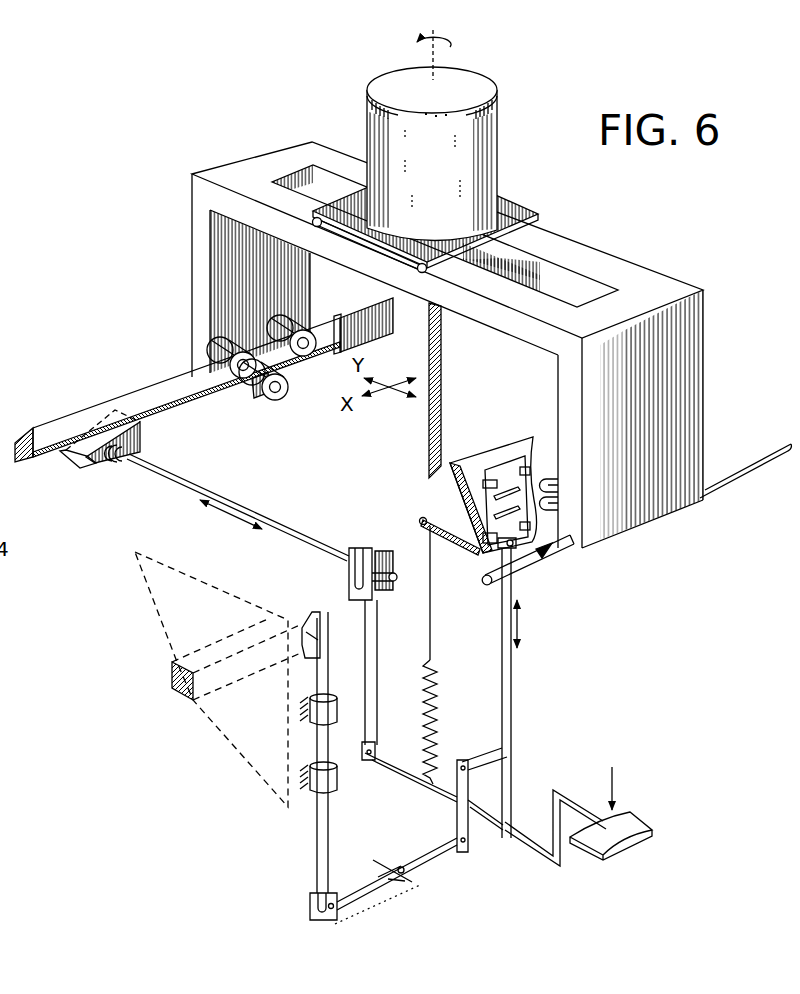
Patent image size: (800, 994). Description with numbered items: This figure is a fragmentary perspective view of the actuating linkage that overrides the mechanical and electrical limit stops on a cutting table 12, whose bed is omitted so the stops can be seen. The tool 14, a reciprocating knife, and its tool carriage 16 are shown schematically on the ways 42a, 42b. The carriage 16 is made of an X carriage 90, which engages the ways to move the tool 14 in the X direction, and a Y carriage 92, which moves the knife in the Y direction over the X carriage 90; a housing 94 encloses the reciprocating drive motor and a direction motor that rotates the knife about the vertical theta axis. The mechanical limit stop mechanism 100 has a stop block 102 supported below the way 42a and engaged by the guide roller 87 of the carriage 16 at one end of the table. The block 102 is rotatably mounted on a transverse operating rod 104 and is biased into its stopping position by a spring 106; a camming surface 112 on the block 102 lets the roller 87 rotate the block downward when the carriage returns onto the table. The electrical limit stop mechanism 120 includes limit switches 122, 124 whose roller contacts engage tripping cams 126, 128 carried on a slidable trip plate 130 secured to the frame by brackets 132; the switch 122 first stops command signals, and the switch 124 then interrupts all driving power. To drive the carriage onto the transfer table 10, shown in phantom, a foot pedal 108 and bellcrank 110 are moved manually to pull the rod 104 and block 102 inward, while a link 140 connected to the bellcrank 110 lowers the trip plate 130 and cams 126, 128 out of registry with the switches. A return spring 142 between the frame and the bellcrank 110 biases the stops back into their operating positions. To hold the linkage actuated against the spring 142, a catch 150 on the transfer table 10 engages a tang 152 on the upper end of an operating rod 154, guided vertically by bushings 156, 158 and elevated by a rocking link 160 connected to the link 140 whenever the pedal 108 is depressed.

The tool carriage 16 is at (186, 174).
The X carriage 90 is at (295, 163).
The Y carriage 92 is at (517, 214).
The housing 94 is at (450, 174).
The tool 14 is at (438, 363).
The cutting table 12 is at (528, 437).
The trip plate 130 is at (502, 465).
The brackets 132 is at (518, 467).
The tripping cam 128 is at (493, 494).
The tripping cam 126 is at (453, 517).
The limit switch 124 is at (546, 480).
The limit switch 122 is at (546, 505).
The electrical limit stop mechanism 120 is at (557, 549).
The link 140 is at (516, 595).
The way 42b is at (730, 472).
The way 42a is at (374, 308).
The mechanical limit stop mechanism 100 is at (152, 424).
The stop block 102 is at (136, 445).
The camming surface 112 is at (67, 457).
The spring 106 is at (118, 457).
The operating rod 104 is at (240, 506).
The guide roller 87 is at (277, 404).
The transfer table 10 is at (148, 605).
The catch 150 is at (262, 627).
The tang 152 is at (310, 618).
The operating rod 154 is at (319, 852).
The bushing 156 is at (308, 707).
The bushing 158 is at (309, 778).
The bellcrank 110 is at (372, 647).
The return spring 142 is at (426, 692).
The rocking link 160 is at (422, 865).
The foot pedal 108 is at (630, 820).